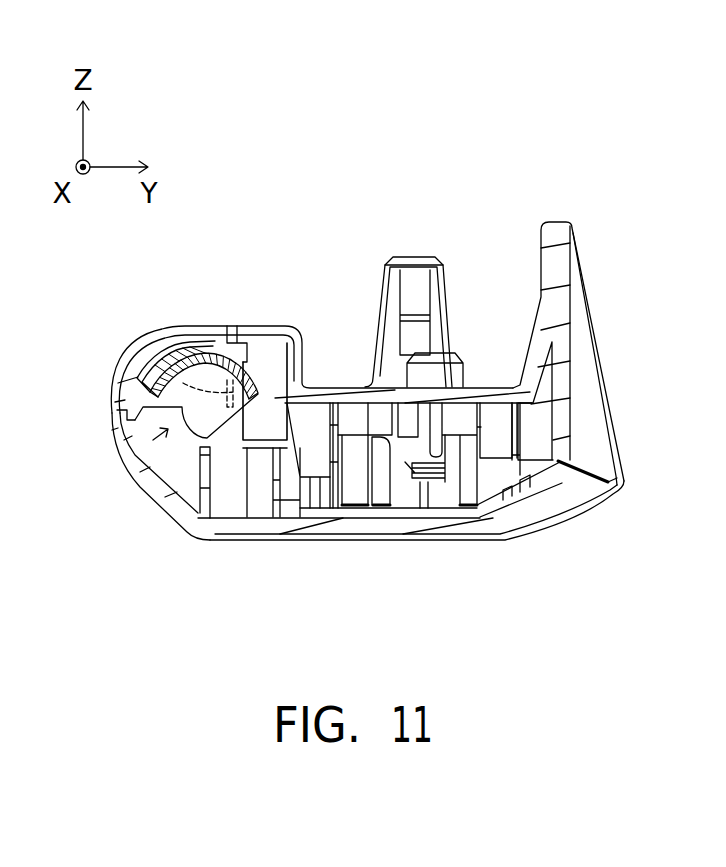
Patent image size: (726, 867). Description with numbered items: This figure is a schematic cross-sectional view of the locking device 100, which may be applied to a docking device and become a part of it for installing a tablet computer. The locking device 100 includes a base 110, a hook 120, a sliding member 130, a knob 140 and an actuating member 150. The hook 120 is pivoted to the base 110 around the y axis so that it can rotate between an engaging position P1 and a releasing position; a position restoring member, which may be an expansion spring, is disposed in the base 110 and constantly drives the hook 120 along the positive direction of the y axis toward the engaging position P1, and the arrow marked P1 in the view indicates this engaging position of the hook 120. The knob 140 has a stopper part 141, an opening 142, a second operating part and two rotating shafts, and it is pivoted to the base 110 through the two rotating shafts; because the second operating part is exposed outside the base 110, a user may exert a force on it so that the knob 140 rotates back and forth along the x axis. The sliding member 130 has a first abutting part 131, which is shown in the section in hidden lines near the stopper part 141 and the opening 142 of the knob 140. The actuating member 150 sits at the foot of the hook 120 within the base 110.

The electronic device / key structure 100 is at (594, 610).
The housing side wall 110 is at (557, 268).
The key / pressing post 120 is at (420, 292).
The elastic member 130 is at (155, 372).
The elastic portion of elastic member 131 is at (155, 372).
The rotating housing 140 is at (128, 463).
The cam portion 141 is at (205, 423).
The rib / stopper 142 is at (230, 444).
The base block 150 is at (428, 372).
The pressing direction P1 is at (416, 244).